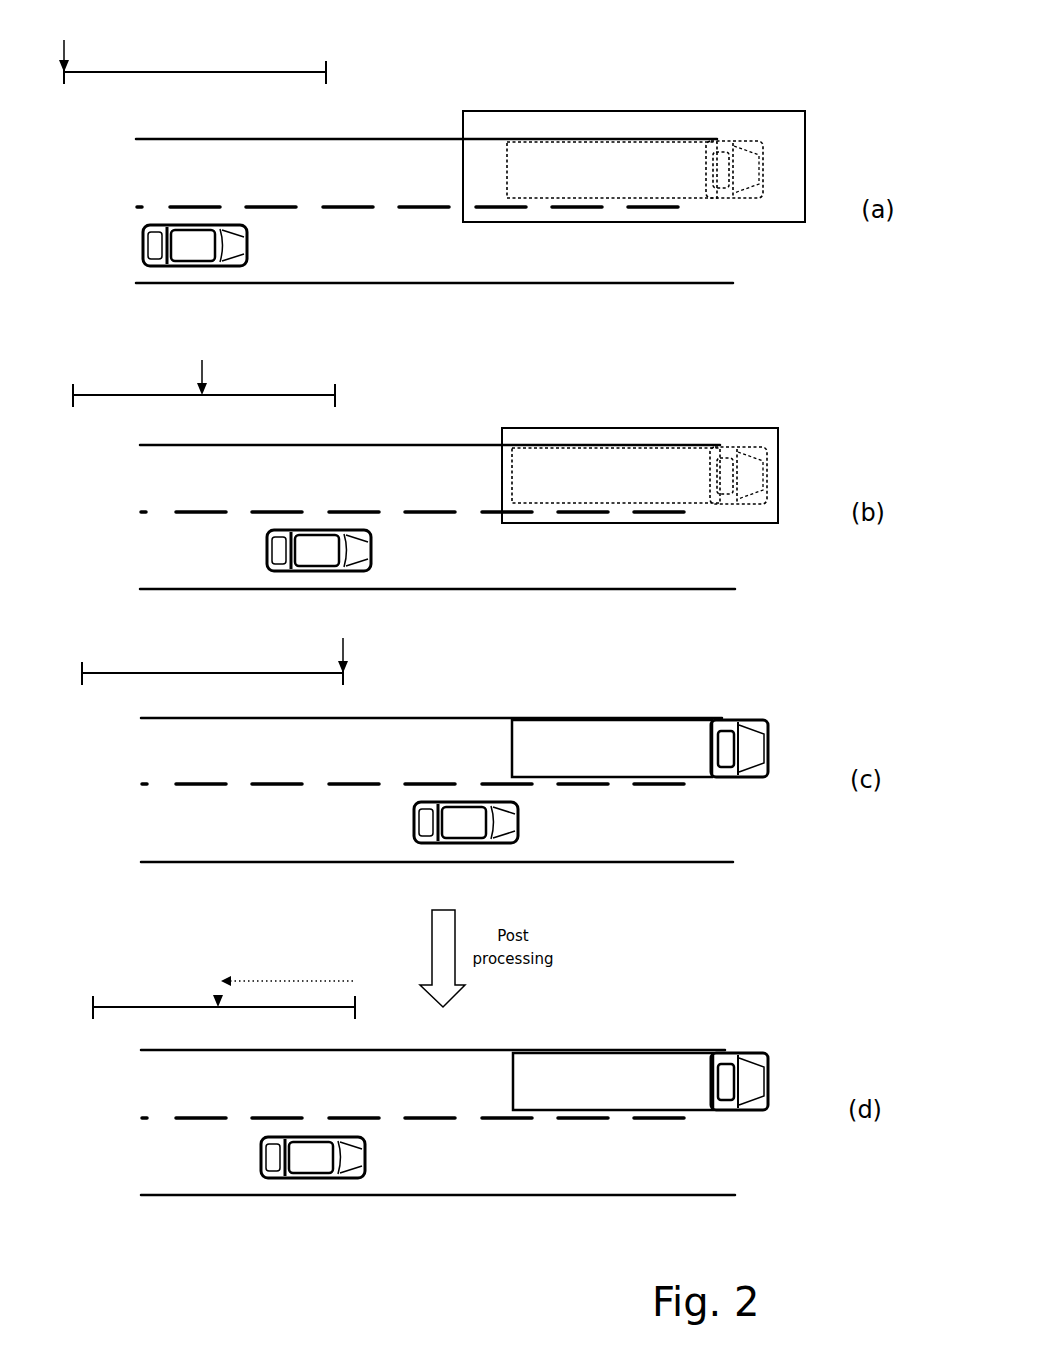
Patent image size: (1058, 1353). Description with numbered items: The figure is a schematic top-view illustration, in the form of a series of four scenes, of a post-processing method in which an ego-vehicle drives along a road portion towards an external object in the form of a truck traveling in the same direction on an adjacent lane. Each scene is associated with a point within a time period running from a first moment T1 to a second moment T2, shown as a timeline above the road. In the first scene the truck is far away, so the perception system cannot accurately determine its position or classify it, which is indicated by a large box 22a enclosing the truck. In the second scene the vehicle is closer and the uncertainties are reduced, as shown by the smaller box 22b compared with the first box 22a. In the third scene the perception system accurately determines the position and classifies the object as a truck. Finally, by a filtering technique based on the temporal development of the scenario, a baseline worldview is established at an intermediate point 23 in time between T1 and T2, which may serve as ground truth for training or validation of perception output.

The box 22a is at (676, 111).
The box 22b is at (672, 428).
The intermediate point in time 23 is at (218, 996).